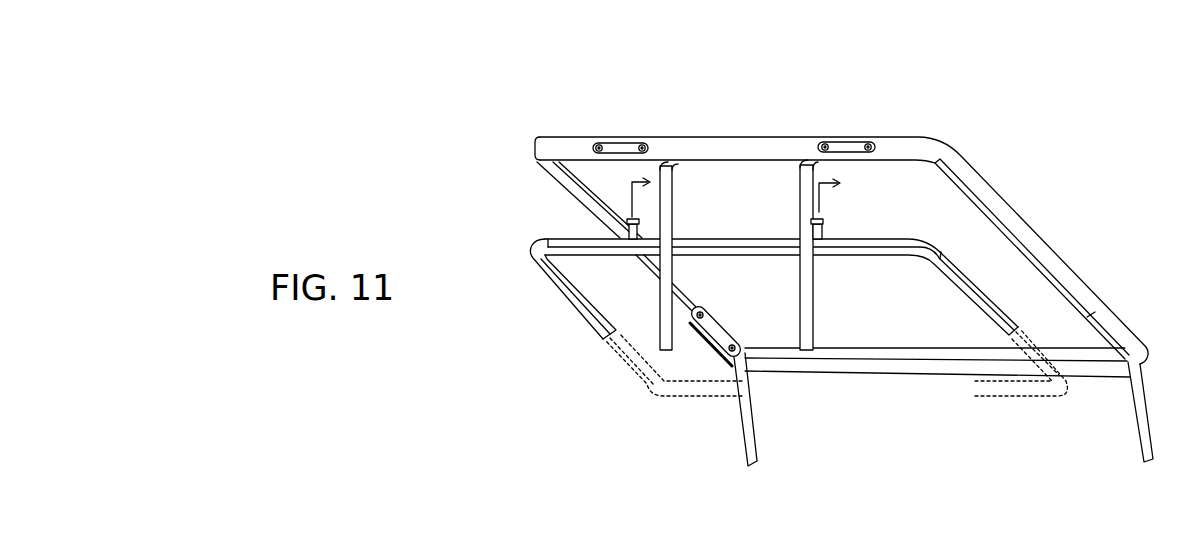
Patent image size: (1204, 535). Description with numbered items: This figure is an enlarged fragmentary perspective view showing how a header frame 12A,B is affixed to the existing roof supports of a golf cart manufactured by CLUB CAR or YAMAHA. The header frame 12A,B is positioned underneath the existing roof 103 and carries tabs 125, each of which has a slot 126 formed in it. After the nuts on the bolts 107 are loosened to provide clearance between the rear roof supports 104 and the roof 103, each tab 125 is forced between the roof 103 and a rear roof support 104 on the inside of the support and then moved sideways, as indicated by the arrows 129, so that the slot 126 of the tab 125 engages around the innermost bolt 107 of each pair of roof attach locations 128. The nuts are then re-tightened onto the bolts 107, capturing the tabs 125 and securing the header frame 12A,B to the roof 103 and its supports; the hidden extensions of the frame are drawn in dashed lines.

The roof attach locations 128 is at (523, 100).
The slots 126 is at (638, 218).
The rear roof supports 104 is at (803, 192).
The bolts 107 is at (870, 145).
The arrows 129 is at (820, 204).
The roof 103 is at (1002, 207).
The tabs 125 is at (628, 223).
The header frame 12A,B is at (742, 253).